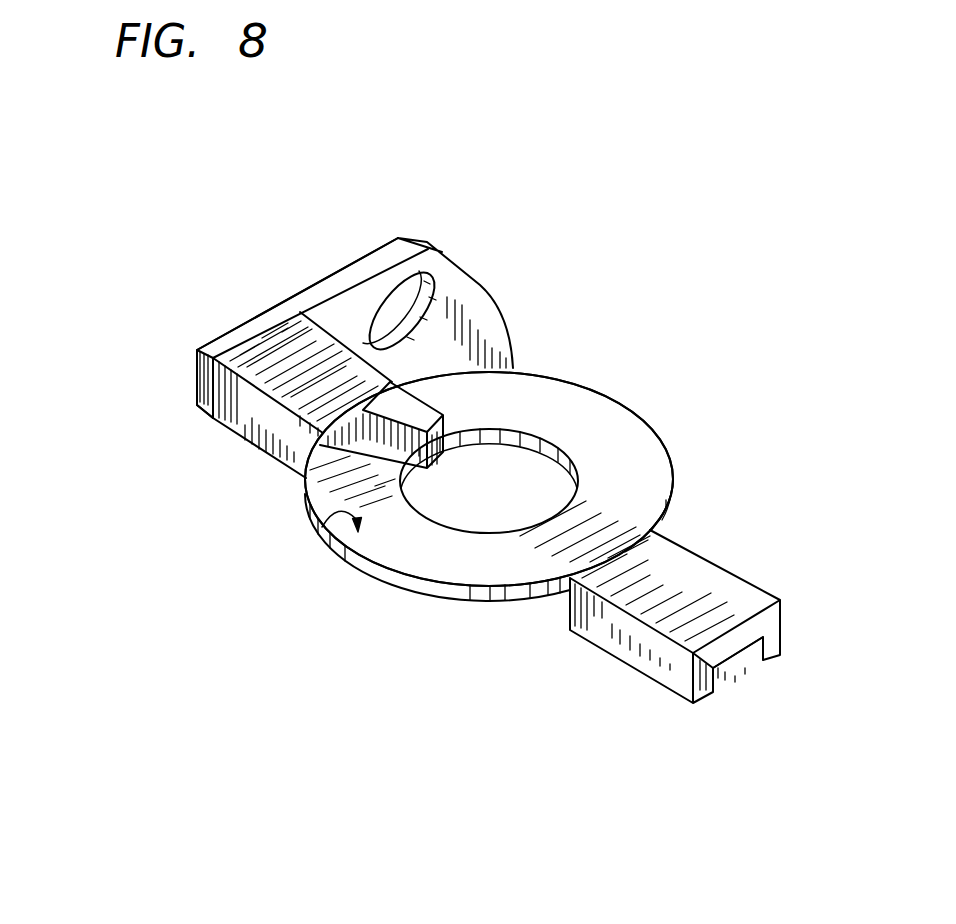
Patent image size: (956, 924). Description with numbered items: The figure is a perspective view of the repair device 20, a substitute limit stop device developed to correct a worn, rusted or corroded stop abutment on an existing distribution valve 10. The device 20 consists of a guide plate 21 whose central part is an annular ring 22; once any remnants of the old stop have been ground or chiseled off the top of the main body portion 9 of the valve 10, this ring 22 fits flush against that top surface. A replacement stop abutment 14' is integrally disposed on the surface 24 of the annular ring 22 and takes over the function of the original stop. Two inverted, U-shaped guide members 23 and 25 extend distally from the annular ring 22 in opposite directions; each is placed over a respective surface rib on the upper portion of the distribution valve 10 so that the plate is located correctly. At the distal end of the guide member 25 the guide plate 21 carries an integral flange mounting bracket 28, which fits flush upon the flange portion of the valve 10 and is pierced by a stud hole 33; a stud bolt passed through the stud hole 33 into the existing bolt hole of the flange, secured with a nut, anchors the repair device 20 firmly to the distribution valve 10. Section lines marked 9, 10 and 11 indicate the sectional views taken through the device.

The main body portion 9 is at (248, 182).
The distribution valve 10 is at (99, 393).
The section line 11- 11 is at (232, 490).
The replacement stop abutment 14' is at (340, 370).
The repair device 20 is at (736, 350).
The guide plate 21 is at (673, 456).
The annular ring 22 is at (637, 499).
The inverted U-shaped guide member 23 is at (727, 572).
The surface 24 is at (322, 527).
The inverted U-shaped guide member 25 is at (243, 418).
The flange mounting bracket 28 is at (468, 297).
The stud hole 33 is at (427, 270).